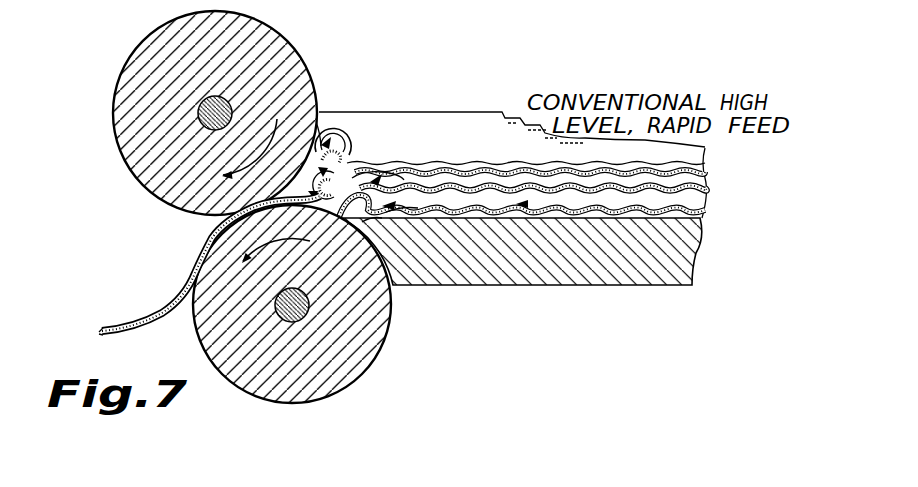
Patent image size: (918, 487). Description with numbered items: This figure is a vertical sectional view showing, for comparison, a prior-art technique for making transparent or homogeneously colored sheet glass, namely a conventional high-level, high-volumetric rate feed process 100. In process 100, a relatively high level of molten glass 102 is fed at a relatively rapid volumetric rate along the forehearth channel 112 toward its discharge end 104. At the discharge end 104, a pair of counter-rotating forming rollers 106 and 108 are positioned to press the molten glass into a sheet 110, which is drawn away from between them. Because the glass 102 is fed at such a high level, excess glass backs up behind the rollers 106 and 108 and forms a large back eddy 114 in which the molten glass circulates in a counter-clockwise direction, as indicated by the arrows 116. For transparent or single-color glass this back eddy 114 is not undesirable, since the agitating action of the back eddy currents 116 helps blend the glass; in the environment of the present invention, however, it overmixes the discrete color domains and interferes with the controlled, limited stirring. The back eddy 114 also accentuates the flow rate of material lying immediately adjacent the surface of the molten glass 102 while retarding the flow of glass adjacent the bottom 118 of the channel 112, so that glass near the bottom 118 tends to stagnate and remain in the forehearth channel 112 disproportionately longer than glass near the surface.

The glass forming process 100 is at (425, 100).
The glass 102 is at (709, 149).
The discharge end 104 is at (336, 102).
The forming roller 106 is at (312, 62).
The forming roller 108 is at (372, 378).
The sheet 110 is at (122, 323).
The forehearth channel 112 is at (443, 128).
The back eddy 114 is at (350, 126).
The arrows 116 is at (410, 245).
The bottom 118 is at (652, 210).